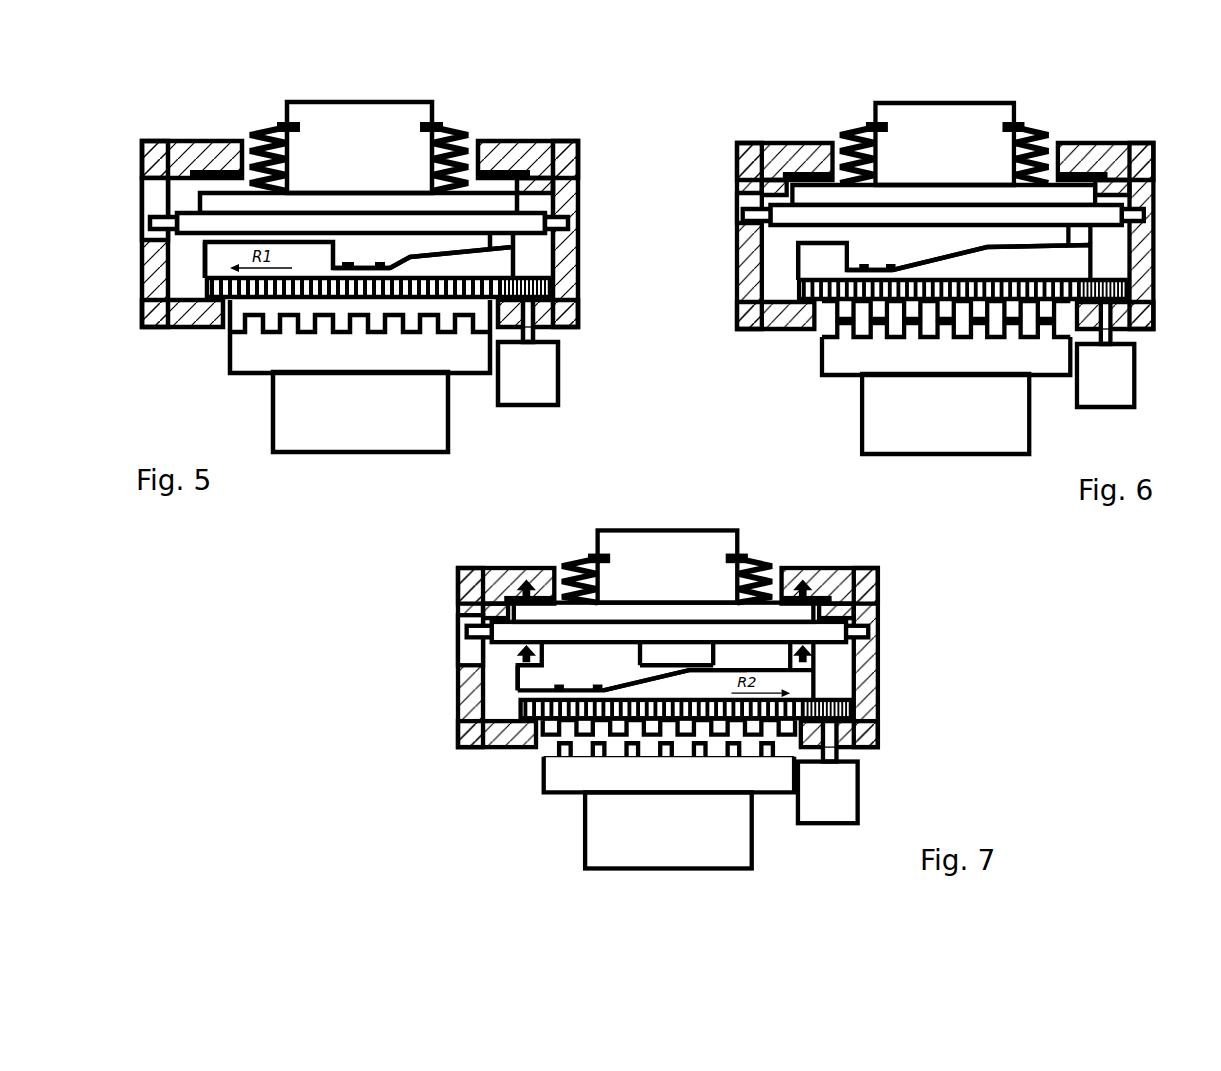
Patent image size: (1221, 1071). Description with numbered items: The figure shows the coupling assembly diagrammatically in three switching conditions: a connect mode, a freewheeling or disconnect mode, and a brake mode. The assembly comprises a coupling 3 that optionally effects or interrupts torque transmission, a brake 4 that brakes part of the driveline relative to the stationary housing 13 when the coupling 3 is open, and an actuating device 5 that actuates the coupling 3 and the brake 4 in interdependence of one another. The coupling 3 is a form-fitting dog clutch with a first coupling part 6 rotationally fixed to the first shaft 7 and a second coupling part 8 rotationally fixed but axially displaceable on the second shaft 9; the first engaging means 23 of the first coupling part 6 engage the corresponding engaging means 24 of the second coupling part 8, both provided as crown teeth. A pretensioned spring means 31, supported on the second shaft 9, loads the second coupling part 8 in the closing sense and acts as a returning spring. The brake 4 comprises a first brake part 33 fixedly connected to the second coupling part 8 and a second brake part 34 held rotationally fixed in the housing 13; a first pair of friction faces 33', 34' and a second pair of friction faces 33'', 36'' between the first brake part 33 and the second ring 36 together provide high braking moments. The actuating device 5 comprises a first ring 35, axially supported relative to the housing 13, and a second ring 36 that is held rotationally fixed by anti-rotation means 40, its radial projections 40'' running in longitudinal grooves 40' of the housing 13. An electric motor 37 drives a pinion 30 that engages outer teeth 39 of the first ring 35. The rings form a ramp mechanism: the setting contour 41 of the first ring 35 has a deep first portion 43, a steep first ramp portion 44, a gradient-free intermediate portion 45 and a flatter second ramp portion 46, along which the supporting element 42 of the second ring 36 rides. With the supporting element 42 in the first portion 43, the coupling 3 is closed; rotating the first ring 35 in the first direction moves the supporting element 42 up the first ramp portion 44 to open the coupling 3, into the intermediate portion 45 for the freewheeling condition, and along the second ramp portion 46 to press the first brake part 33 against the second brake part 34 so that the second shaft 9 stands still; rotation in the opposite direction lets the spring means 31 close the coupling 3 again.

In FIG. 5, the coupling 3 is at (322, 351).
In FIG. 6, the coupling 3 is at (911, 370).
In FIG. 7, the coupling 3 is at (637, 783).
In FIG. 5, the brake 4 is at (132, 180).
In FIG. 6, the brake 4 is at (765, 145).
In FIG. 7, the brake 4 is at (881, 606).
In FIG. 5, the actuating device 5 is at (555, 332).
In FIG. 6, the actuating device 5 is at (1132, 336).
In FIG. 7, the actuating device 5 is at (855, 755).
In FIG. 5, the first coupling part 6 is at (343, 360).
In FIG. 6, the first coupling part 6 is at (944, 377).
In FIG. 7, the first coupling part 6 is at (669, 801).
In FIG. 5, the first shaft 7 is at (375, 413).
In FIG. 6, the first shaft 7 is at (923, 414).
In FIG. 7, the first shaft 7 is at (644, 838).
In FIG. 5, the second coupling part 8 is at (360, 366).
In FIG. 6, the second coupling part 8 is at (946, 359).
In FIG. 7, the second coupling part 8 is at (658, 782).
In FIG. 5, the second shaft 9 is at (337, 134).
In FIG. 6, the second shaft 9 is at (942, 124).
In FIG. 7, the second shaft 9 is at (666, 551).
In FIG. 5, the housing 13 is at (321, 217).
In FIG. 6, the housing 13 is at (925, 223).
In FIG. 7, the housing 13 is at (642, 646).
In FIG. 7, the first engaging means 23 is at (666, 793).
In FIG. 7, the second engaging means 24 is at (669, 782).
In FIG. 5, the pinion 30 is at (416, 291).
In FIG. 6, the pinion 30 is at (997, 293).
In FIG. 7, the pinion 30 is at (723, 713).
In FIG. 5, the spring means 31 is at (251, 137).
In FIG. 6, the spring means 31 is at (843, 135).
In FIG. 7, the spring means 31 is at (576, 566).
In FIG. 5, the first brake part 33 is at (182, 130).
In FIG. 6, the first brake part 33 is at (965, 169).
In FIG. 7, the first brake part 33 is at (853, 593).
In FIG. 5, the friction face of first brake part 33' is at (538, 136).
In FIG. 7, the friction face of first brake part 33'' is at (506, 579).
In FIG. 5, the second brake part 34 is at (205, 142).
In FIG. 6, the second brake part 34 is at (945, 132).
In FIG. 7, the second brake part 34 is at (681, 573).
In FIG. 5, the friction face of second brake part 34' is at (520, 129).
In FIG. 5, the first ring 35 is at (416, 255).
In FIG. 6, the first ring 35 is at (997, 252).
In FIG. 7, the first ring 35 is at (721, 673).
In FIG. 5, the second ring 36 is at (414, 200).
In FIG. 6, the second ring 36 is at (994, 219).
In FIG. 7, the second ring 36 is at (606, 635).
In FIG. 7, the friction face of second ring 36'' is at (662, 596).
In FIG. 5, the electric motor 37 is at (553, 352).
In FIG. 6, the electric motor 37 is at (1131, 359).
In FIG. 7, the electric motor 37 is at (849, 772).
In FIG. 5, the outer teeth 39 is at (146, 273).
In FIG. 6, the outer teeth 39 is at (746, 279).
In FIG. 7, the outer teeth 39 is at (462, 698).
In FIG. 5, the anti-rotation means 40 is at (400, 219).
In FIG. 7, the anti-rotation means 40 is at (698, 640).
In FIG. 5, the longitudinal grooves 40' is at (124, 209).
In FIG. 6, the longitudinal grooves 40' is at (726, 224).
In FIG. 5, the radial projections 40'' is at (127, 232).
In FIG. 6, the radial projections 40'' is at (916, 213).
In FIG. 5, the setting contour 41 is at (361, 166).
In FIG. 6, the setting contour 41 is at (883, 205).
In FIG. 7, the setting contour 41 is at (676, 616).
In FIG. 5, the supporting element 42 is at (356, 348).
In FIG. 6, the supporting element 42 is at (941, 352).
In FIG. 7, the supporting element 42 is at (663, 773).
In FIG. 5, the first portion 43 is at (342, 208).
In FIG. 6, the first portion 43 is at (863, 250).
In FIG. 7, the first portion 43 is at (562, 669).
In FIG. 5, the first ramp portion 44 is at (394, 207).
In FIG. 6, the first ramp portion 44 is at (900, 250).
In FIG. 7, the first ramp portion 44 is at (596, 669).
In FIG. 5, the intermediate portion 45 is at (448, 132).
In FIG. 6, the intermediate portion 45 is at (989, 189).
In FIG. 7, the intermediate portion 45 is at (696, 611).
In FIG. 5, the second ramp portion 46 is at (453, 171).
In FIG. 6, the second ramp portion 46 is at (992, 205).
In FIG. 7, the second ramp portion 46 is at (674, 629).